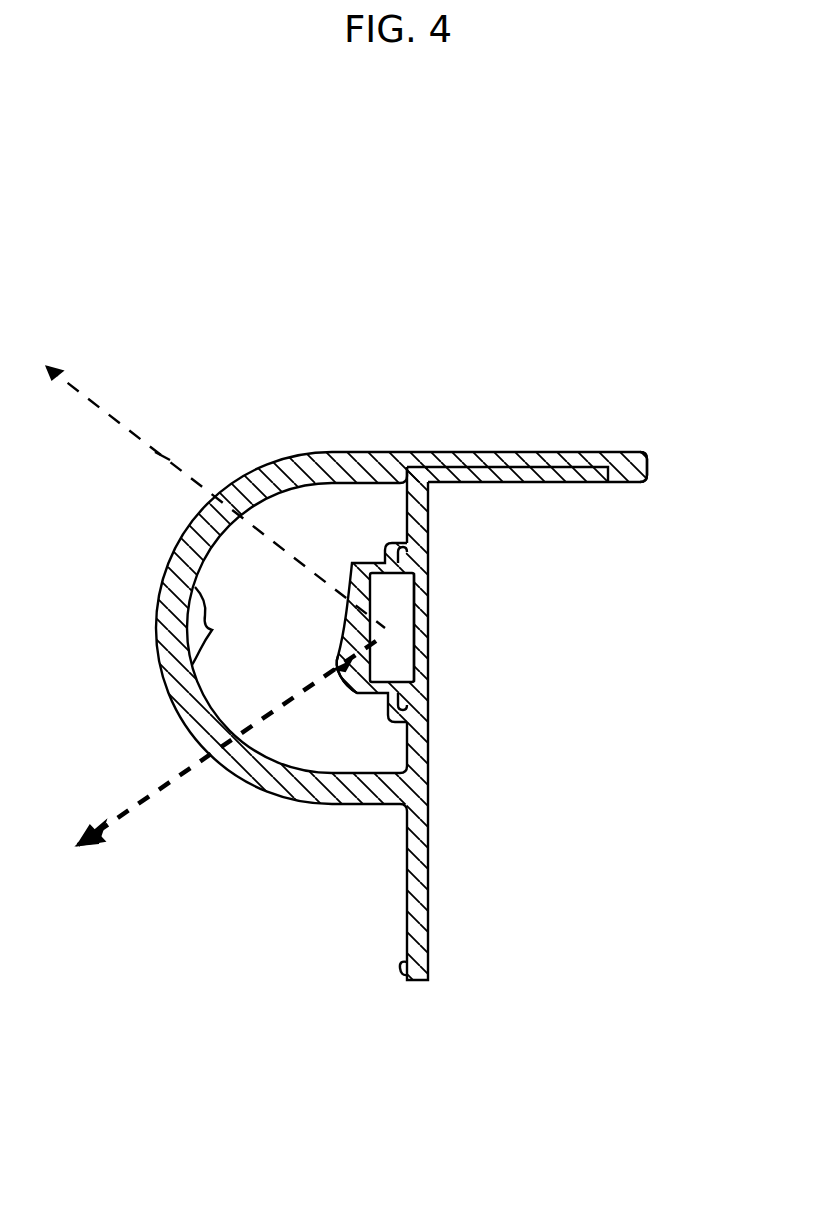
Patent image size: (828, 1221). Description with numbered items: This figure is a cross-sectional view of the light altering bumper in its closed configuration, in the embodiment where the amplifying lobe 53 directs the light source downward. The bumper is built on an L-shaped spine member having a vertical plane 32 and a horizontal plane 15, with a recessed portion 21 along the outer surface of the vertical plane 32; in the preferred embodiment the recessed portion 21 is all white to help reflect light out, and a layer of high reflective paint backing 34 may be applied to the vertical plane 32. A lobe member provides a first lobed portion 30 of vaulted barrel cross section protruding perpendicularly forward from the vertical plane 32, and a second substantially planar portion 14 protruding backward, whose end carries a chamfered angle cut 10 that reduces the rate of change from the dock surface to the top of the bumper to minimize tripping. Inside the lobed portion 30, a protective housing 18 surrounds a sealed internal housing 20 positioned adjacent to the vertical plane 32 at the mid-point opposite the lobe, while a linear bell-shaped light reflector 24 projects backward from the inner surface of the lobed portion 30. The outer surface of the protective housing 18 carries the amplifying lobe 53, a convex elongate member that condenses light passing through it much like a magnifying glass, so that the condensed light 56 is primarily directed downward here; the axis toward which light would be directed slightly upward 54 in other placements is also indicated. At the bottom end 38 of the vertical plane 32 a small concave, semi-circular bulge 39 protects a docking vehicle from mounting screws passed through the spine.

The chamfered angle cut 10 is at (645, 462).
The second substantially planar portion 14 is at (447, 460).
The horizontal plane 15 is at (532, 470).
The protective housing 18 is at (352, 580).
The sealed internal housing 20 is at (405, 668).
The recessed portion 21 is at (420, 628).
The linear bell-shaped light reflector 24 is at (205, 630).
The first lobed portion 30 is at (193, 533).
The vertical plane 32 is at (430, 735).
The high reflective paint backing 34 is at (432, 795).
The bottom end 38 is at (432, 930).
The small concave, semi-circular bulge 39 is at (402, 978).
The amplifying lobe 53 is at (342, 660).
The slightly upward direction 54 is at (168, 452).
The condensed light 56 is at (163, 788).